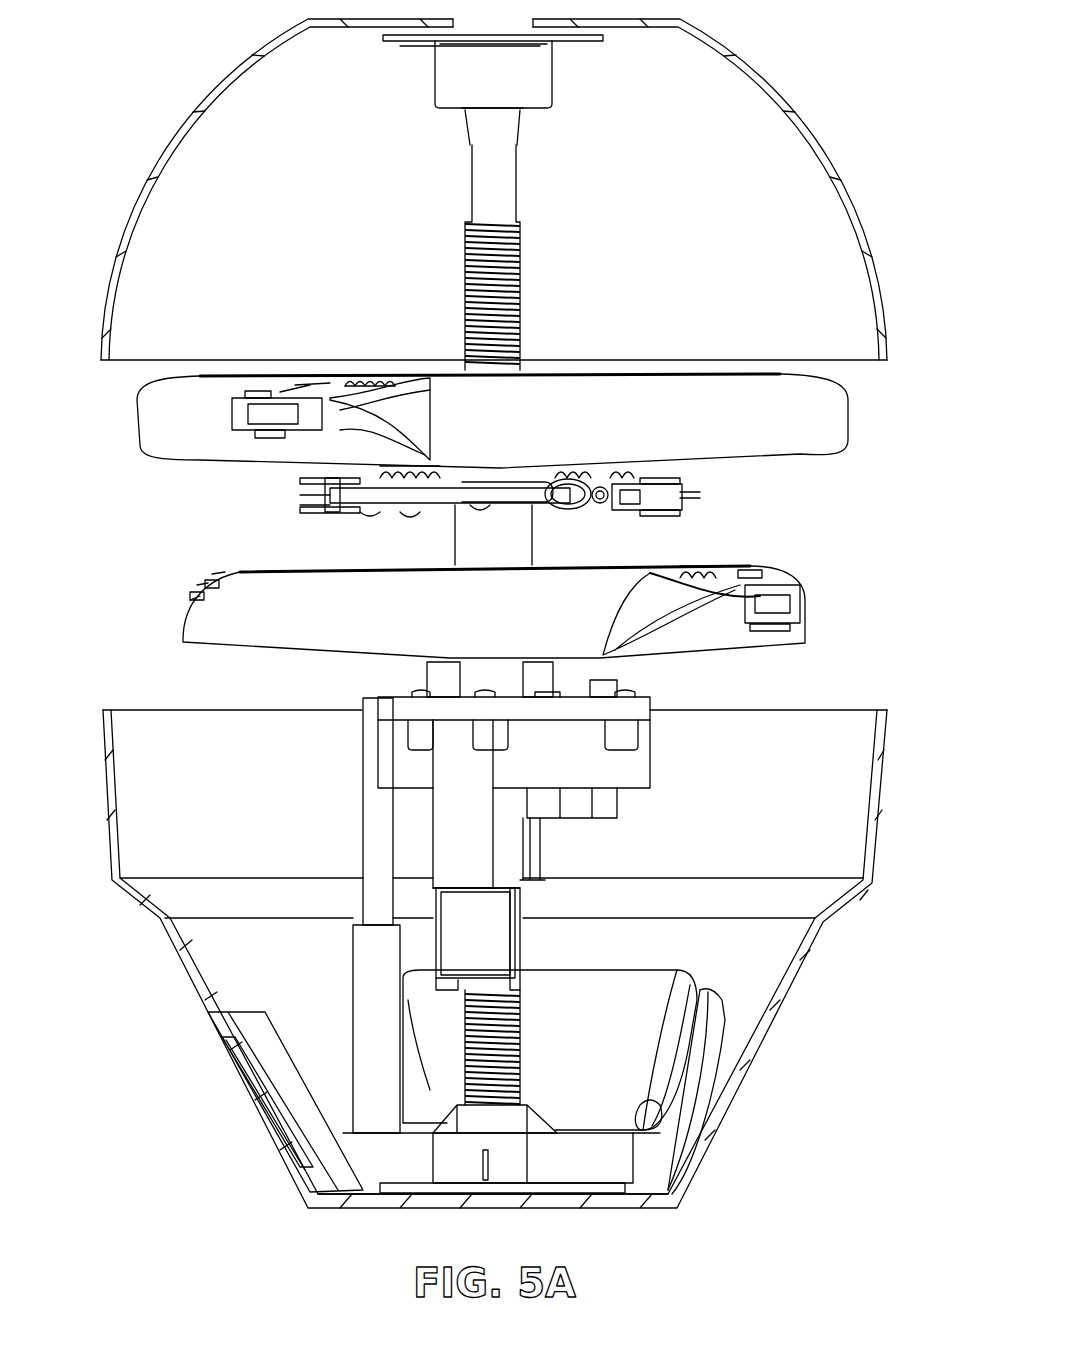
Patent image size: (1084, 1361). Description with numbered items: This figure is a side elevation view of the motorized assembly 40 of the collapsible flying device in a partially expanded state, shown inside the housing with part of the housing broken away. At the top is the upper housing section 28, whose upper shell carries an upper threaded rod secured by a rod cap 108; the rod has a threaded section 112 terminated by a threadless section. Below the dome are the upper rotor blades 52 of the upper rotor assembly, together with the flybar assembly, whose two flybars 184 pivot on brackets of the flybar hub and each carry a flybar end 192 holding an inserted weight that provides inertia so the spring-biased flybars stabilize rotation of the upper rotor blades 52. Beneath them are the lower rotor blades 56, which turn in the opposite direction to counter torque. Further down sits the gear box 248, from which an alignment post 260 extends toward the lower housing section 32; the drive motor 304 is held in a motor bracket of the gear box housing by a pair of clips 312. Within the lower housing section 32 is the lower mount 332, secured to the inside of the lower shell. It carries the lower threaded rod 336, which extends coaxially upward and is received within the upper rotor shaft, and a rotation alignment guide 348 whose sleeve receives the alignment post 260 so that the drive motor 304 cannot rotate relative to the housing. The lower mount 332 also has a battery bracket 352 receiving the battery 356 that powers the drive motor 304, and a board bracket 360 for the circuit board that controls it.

The motorized assembly 40 is at (135, 128).
The upper housing section 28 is at (818, 140).
The rod cap 108 is at (398, 50).
The threaded section 112 is at (466, 305).
The upper rotor blades 52 is at (160, 422).
The flybars 184 is at (415, 500).
The flybar end 192 is at (562, 503).
The lower rotor blades 56 is at (200, 625).
The alignment post 260 is at (362, 762).
The gear box 248 is at (652, 762).
The lower housing section 32 is at (884, 805).
The drive motor 304 is at (460, 947).
The clips 312 is at (520, 943).
The rotation alignment guide 348 is at (358, 987).
The board bracket 360 is at (217, 1025).
The lower threaded rod 336 is at (522, 1052).
The battery 356 is at (635, 1030).
The battery bracket 352 is at (710, 1087).
The lower mount 332 is at (592, 1190).